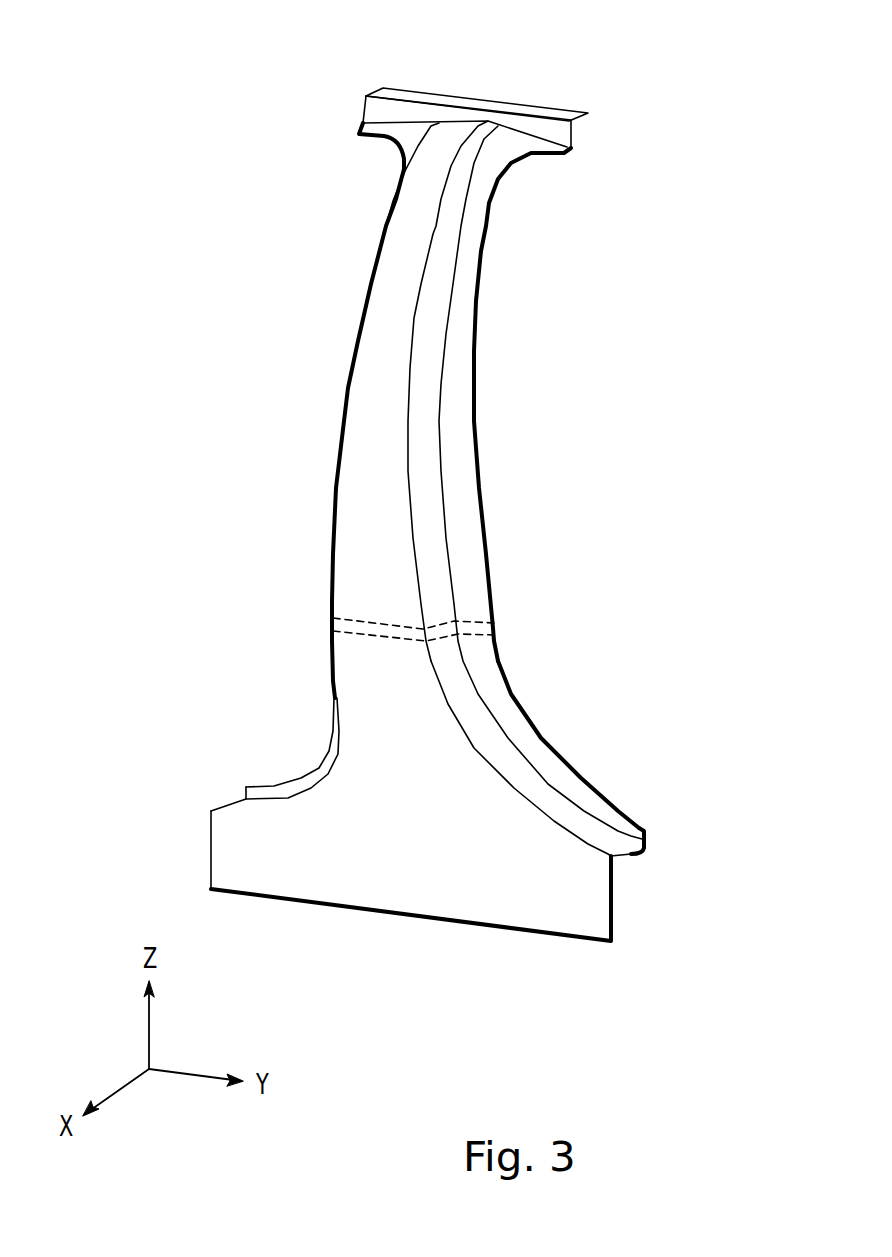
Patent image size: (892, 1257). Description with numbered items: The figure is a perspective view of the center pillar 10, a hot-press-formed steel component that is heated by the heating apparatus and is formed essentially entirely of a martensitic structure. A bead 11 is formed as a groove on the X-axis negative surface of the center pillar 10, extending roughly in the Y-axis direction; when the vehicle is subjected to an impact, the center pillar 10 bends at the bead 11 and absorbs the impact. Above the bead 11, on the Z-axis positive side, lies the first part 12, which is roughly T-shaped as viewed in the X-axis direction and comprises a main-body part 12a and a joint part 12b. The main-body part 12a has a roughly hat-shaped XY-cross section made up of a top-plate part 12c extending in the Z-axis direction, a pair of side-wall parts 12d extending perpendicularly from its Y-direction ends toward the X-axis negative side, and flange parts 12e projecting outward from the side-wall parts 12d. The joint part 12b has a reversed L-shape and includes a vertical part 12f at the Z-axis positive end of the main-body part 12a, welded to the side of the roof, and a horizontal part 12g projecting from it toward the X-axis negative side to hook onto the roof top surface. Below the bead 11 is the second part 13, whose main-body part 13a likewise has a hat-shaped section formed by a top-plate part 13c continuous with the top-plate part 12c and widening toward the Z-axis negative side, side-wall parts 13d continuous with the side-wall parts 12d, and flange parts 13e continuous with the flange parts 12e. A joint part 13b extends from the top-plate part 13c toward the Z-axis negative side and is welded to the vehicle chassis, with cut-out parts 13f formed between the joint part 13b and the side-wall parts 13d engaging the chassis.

The center pillar 10 is at (702, 31).
The bead 11 is at (493, 627).
The first part 12 is at (493, 470).
The main-body part 12a is at (485, 405).
The joint part 12b is at (507, 83).
The top-plate part 12c is at (355, 402).
The side-wall parts 12d is at (425, 313).
The flange parts 12e is at (468, 255).
The vertical part 12f is at (365, 105).
The horizontal part 12g is at (558, 110).
The second part 13 is at (625, 918).
The main-body part 13a is at (580, 770).
The joint part 13b is at (545, 923).
The top-plate part 13c is at (363, 708).
The side-wall parts 13d is at (473, 728).
The flange parts 13e is at (618, 825).
The cut-out parts 13f is at (615, 882).